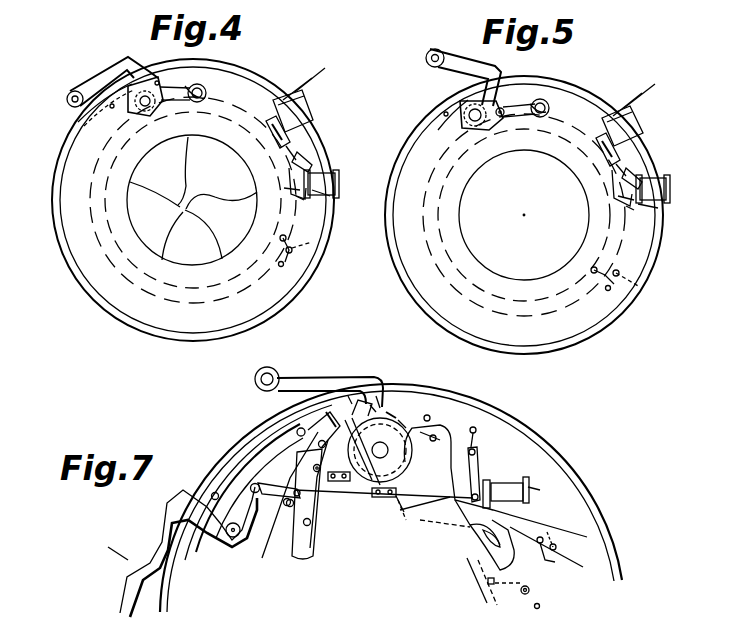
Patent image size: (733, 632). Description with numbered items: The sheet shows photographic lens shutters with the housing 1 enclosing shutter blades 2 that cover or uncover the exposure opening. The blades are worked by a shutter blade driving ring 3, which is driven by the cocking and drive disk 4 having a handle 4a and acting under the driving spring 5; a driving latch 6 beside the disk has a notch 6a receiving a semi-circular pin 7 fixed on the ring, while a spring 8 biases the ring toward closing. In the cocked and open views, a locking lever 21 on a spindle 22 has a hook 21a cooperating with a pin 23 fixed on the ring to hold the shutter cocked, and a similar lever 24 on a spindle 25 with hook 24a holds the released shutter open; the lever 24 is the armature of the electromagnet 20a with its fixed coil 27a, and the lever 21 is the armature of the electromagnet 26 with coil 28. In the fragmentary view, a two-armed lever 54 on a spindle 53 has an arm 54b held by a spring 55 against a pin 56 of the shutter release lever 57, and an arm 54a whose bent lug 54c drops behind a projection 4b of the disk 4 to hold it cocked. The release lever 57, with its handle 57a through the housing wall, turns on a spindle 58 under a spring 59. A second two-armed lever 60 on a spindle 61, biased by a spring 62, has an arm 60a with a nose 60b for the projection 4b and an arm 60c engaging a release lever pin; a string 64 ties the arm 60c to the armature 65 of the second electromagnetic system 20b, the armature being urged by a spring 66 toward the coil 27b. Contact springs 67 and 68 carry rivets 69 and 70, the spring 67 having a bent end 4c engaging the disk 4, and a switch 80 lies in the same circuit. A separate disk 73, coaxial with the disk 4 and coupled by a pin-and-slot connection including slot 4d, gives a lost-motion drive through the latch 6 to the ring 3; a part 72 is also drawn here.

In FIG. 4, the housing 1 is at (305, 283).
In FIG. 5, the housing 1 is at (598, 332).
In FIG. 7, the housing 1 is at (600, 522).
In FIG. 4, the shutter blades 2 is at (227, 163).
In FIG. 4, the shutter blade driving ring 3 is at (98, 230).
In FIG. 5, the shutter blade driving ring 3 is at (440, 262).
In FIG. 7, the shutter blade driving ring 3 is at (490, 600).
In FIG. 4, the cocking and drive disk 4 is at (148, 80).
In FIG. 5, the cocking and drive disk 4 is at (498, 106).
In FIG. 7, the cocking and drive disk 4 is at (428, 420).
In FIG. 4, the handle 4a is at (100, 78).
In FIG. 5, the handle 4a is at (463, 62).
In FIG. 7, the handle 4a is at (328, 376).
In FIG. 7, the projection 4b is at (388, 500).
In FIG. 7, the bent extremity of spring 4c is at (384, 395).
In FIG. 7, the slot 4d is at (438, 430).
In FIG. 4, the driving spring 5 is at (90, 106).
In FIG. 5, the driving spring 5 is at (452, 116).
In FIG. 7, the driving spring 5 is at (428, 430).
In FIG. 4, the driving latch 6 is at (179, 102).
In FIG. 5, the driving latch 6 is at (511, 118).
In FIG. 7, the driving latch 6 is at (432, 528).
In FIG. 4, the mouth or notch 6a is at (201, 103).
In FIG. 5, the mouth or notch 6a is at (539, 117).
In FIG. 7, the mouth or notch 6a is at (488, 560).
In FIG. 4, the pin 7 is at (199, 85).
In FIG. 5, the pin 7 is at (543, 99).
In FIG. 7, the pin 7 is at (470, 540).
In FIG. 4, the spring 8 is at (312, 242).
In FIG. 5, the spring 8 is at (640, 287).
In FIG. 7, the spring 8 is at (531, 590).
In FIG. 4, the electromagnet 20a is at (340, 177).
In FIG. 5, the electromagnet 20a is at (672, 186).
In FIG. 7, the second electromagnetic system 20b is at (532, 480).
In FIG. 4, the lever 21 is at (272, 133).
In FIG. 5, the lever 21 is at (603, 145).
In FIG. 4, the nose or hook 21a is at (300, 150).
In FIG. 5, the nose or hook 21a is at (630, 163).
In FIG. 4, the spindle 22 is at (263, 119).
In FIG. 5, the spindle 22 is at (597, 135).
In FIG. 4, the pin 23 is at (281, 180).
In FIG. 5, the pin 23 is at (612, 182).
In FIG. 4, the lever 24 is at (290, 192).
In FIG. 5, the lever 24 is at (626, 202).
In FIG. 4, the nose or hook portion 24a is at (312, 162).
In FIG. 5, the nose or hook portion 24a is at (645, 170).
In FIG. 4, the spindle 25 is at (305, 211).
In FIG. 5, the spindle 25 is at (640, 210).
In FIG. 4, the electromagnet 26 is at (321, 105).
In FIG. 5, the electromagnet 26 is at (648, 121).
In FIG. 4, the magnet coil 27a is at (318, 192).
In FIG. 5, the magnet coil 27a is at (645, 205).
In FIG. 7, the magnetic coil 27b is at (527, 488).
In FIG. 4, the magnet coil 28 is at (306, 122).
In FIG. 5, the magnet coil 28 is at (638, 138).
In FIG. 7, the spindle 53 is at (322, 410).
In FIG. 7, the two-armed lever 54 is at (290, 375).
In FIG. 7, the arm 54a is at (374, 405).
In FIG. 7, the arm 54b is at (318, 444).
In FIG. 7, the bent lug 54c is at (314, 525).
In FIG. 7, the spring 55 is at (300, 413).
In FIG. 7, the pin 56 is at (258, 494).
In FIG. 7, the shutter release lever 57 is at (228, 500).
In FIG. 7, the handle 57a is at (148, 563).
In FIG. 7, the spindle 58 is at (233, 538).
In FIG. 7, the spring 59 is at (220, 500).
In FIG. 7, the two-armed lever 60 is at (300, 430).
In FIG. 7, the arm 60a is at (326, 410).
In FIG. 7, the locking nose or hook 60b is at (352, 404).
In FIG. 7, the arm 60c is at (305, 527).
In FIG. 7, the spindle 61 is at (312, 468).
In FIG. 7, the spring 62 is at (316, 500).
In FIG. 7, the tie rod or string 64 is at (398, 510).
In FIG. 7, the armature 65 is at (490, 482).
In FIG. 7, the spring 66 is at (480, 440).
In FIG. 7, the spring 67 is at (380, 450).
In FIG. 7, the spring 68 is at (362, 461).
In FIG. 7, the contact rivet 69 is at (400, 415).
In FIG. 7, the contact rivet 70 is at (406, 428).
In FIG. 7, the spring 72 is at (400, 500).
In FIG. 7, the separate disk 73 is at (439, 455).
In FIG. 7, the contact switch 80 is at (556, 552).